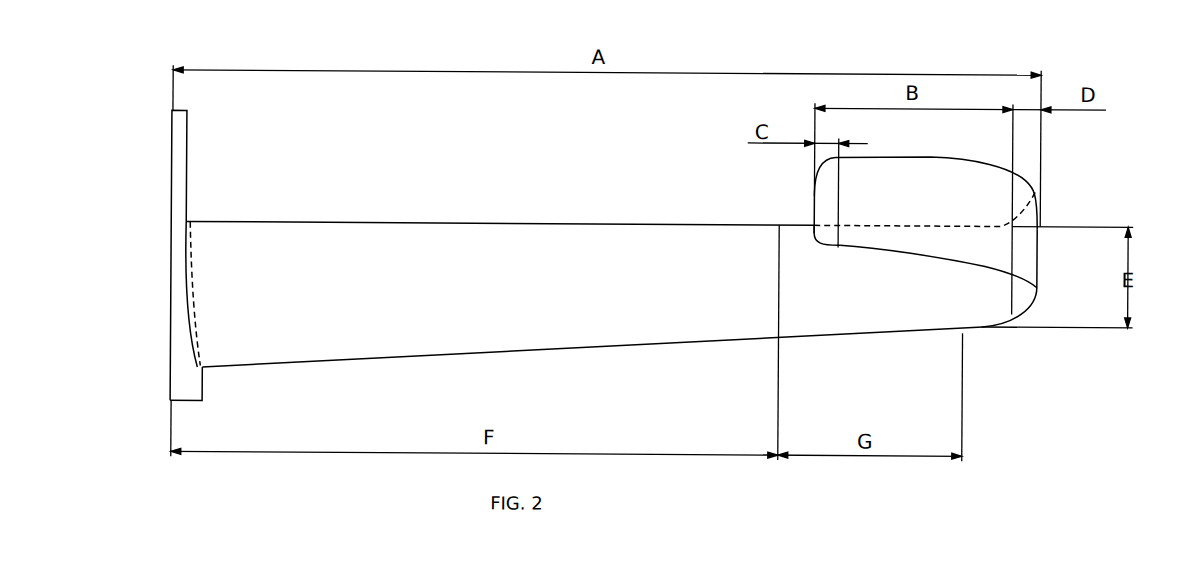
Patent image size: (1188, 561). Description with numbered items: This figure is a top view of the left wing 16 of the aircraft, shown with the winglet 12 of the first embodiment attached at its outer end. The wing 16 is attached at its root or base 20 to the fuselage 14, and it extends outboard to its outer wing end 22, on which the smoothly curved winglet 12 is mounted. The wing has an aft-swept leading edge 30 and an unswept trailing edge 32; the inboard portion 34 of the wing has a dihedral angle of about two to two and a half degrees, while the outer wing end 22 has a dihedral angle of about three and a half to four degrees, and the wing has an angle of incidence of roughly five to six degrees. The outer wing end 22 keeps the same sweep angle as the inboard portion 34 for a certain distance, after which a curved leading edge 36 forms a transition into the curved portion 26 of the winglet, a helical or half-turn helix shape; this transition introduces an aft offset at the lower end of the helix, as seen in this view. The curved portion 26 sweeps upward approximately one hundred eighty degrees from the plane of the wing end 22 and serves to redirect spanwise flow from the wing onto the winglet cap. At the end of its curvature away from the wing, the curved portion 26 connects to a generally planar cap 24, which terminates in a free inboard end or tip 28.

The winglet 12 is at (1058, 197).
The fuselage 14 is at (187, 150).
The wing 16 is at (333, 163).
The root or base 20 is at (197, 297).
The outer wing end 22 is at (903, 302).
The cap 24 is at (888, 262).
The curved portion 26 is at (1042, 257).
The tip 28 is at (813, 230).
The leading edge 30 is at (391, 359).
The trailing edge 32 is at (430, 224).
The inboard portion 34 is at (500, 323).
The curved leading edge 36 is at (1013, 316).